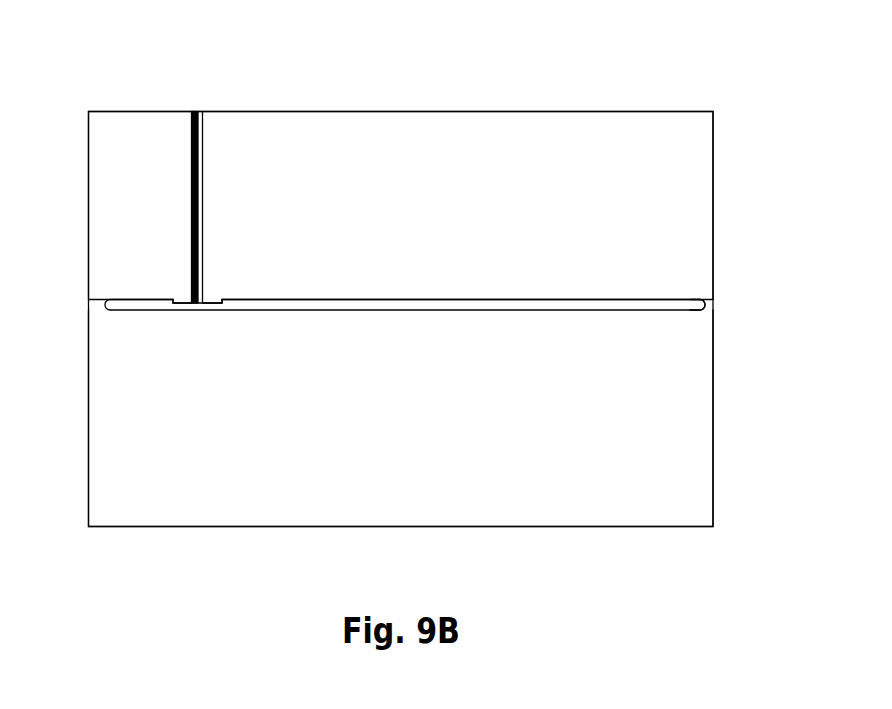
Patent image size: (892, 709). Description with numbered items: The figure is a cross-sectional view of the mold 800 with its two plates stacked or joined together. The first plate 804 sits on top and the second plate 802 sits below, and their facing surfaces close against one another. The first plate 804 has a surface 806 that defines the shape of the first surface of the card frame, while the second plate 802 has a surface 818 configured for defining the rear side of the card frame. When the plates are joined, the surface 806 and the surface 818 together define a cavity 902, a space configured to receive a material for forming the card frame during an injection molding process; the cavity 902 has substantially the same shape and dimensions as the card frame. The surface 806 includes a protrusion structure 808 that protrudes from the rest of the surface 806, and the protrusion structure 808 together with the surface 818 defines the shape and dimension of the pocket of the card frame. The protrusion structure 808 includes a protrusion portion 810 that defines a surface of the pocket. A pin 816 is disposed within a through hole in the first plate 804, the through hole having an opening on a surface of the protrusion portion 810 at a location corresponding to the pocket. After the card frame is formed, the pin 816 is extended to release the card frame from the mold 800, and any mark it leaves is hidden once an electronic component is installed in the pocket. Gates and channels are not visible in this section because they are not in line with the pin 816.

The mold 800 is at (104, 61).
The second plate 802 is at (713, 400).
The first plate 804 is at (713, 181).
The surface 806 is at (450, 299).
The protrusion structure 808 is at (213, 292).
The protrusion portion 810 is at (187, 302).
The pin 816 is at (192, 180).
The surface 818 is at (420, 310).
The cavity 902 is at (670, 309).